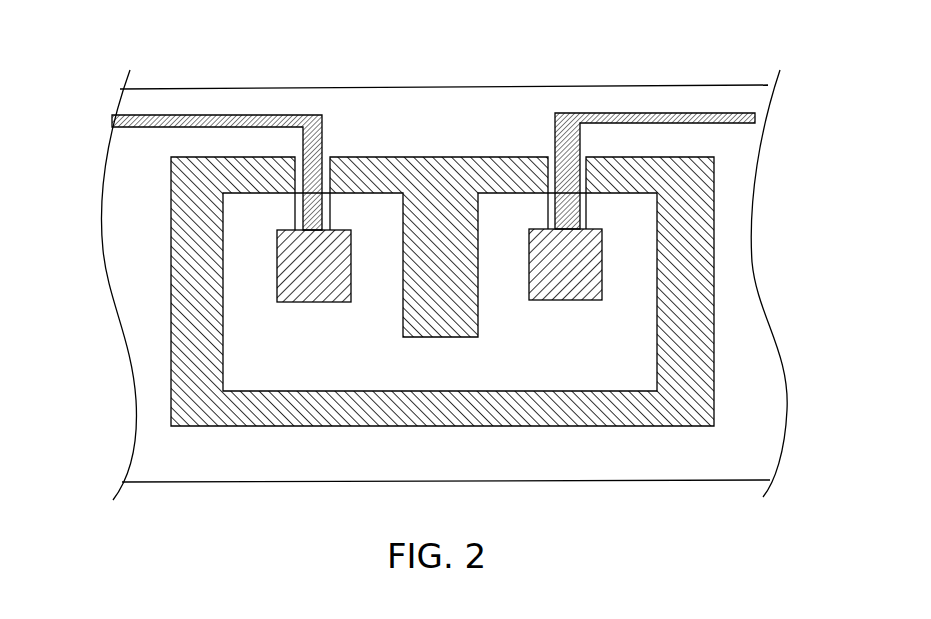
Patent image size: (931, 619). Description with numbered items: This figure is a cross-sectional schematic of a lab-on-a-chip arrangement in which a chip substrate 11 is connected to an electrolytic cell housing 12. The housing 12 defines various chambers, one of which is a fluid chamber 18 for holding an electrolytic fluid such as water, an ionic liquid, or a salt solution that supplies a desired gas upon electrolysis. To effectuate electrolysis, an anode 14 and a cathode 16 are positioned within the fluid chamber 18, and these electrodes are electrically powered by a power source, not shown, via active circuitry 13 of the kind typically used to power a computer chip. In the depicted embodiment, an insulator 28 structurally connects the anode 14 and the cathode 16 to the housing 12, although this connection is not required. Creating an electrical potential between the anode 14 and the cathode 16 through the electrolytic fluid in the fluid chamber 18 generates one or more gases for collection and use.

The chip substrate 11 is at (740, 263).
The electrolytic cell housing 12 is at (395, 123).
The active circuitry 13 is at (182, 118).
The anode 14 is at (303, 282).
The cathode 16 is at (577, 282).
The fluid chamber 18 is at (487, 355).
The insulator 28 is at (587, 185).